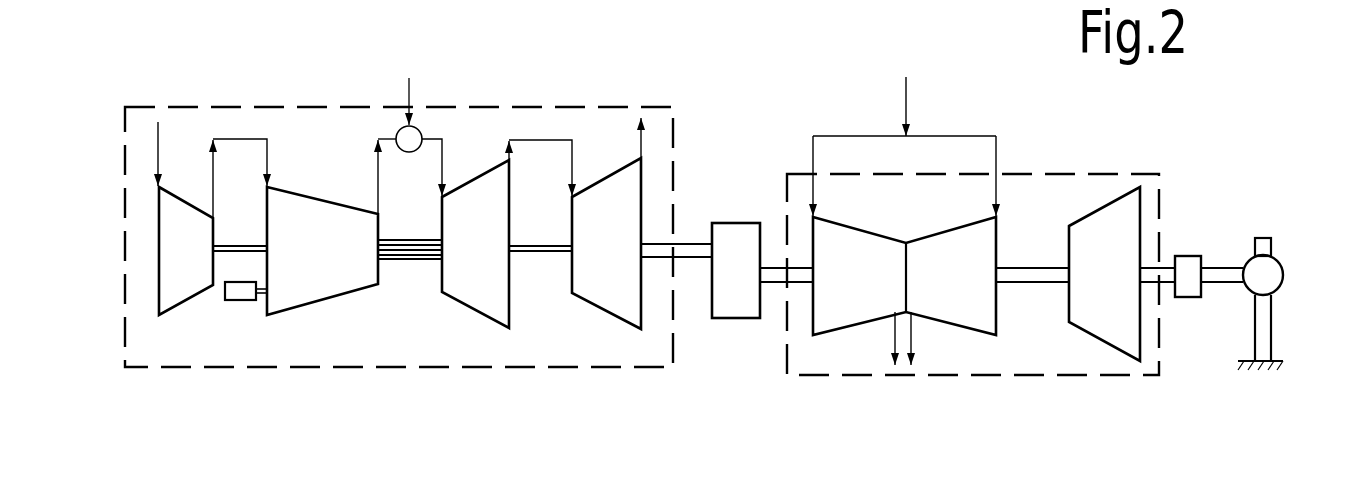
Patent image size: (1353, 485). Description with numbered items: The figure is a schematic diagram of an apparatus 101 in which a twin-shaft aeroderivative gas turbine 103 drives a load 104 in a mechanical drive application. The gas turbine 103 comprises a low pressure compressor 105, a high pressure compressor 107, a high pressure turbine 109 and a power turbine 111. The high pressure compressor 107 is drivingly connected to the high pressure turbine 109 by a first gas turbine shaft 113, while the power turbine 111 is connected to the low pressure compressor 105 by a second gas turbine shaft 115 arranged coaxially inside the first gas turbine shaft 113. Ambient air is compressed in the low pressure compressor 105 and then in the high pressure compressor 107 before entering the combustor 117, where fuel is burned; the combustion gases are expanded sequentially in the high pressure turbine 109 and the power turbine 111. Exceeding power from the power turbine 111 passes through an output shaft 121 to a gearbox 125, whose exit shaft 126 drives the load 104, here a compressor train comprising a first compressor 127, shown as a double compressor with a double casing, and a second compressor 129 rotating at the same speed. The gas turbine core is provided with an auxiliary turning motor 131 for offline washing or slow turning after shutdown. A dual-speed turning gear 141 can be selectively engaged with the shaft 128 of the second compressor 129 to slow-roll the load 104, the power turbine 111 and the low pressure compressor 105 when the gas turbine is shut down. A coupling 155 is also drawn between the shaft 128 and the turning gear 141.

The apparatus 101 is at (740, 121).
The gas turbine 103 is at (394, 371).
The load 104 is at (992, 379).
The low pressure compressor 105 is at (173, 296).
The high pressure compressor 107 is at (334, 290).
The high pressure turbine 109 is at (479, 298).
The power turbine 111 is at (610, 299).
The first gas turbine shaft 113 is at (410, 259).
The second gas turbine shaft 115 is at (236, 250).
The combustor 117 is at (420, 144).
The output shaft 121 is at (562, 253).
The gearbox 125 is at (731, 232).
The exit shaft 126 is at (778, 284).
The first compressor 127 is at (917, 231).
The shaft 128 is at (1152, 284).
The second compressor 129 is at (1090, 230).
The auxiliary turning motor 131 is at (243, 292).
The dual-speed turning gear 141 is at (1285, 251).
The coupling 155 is at (1189, 265).